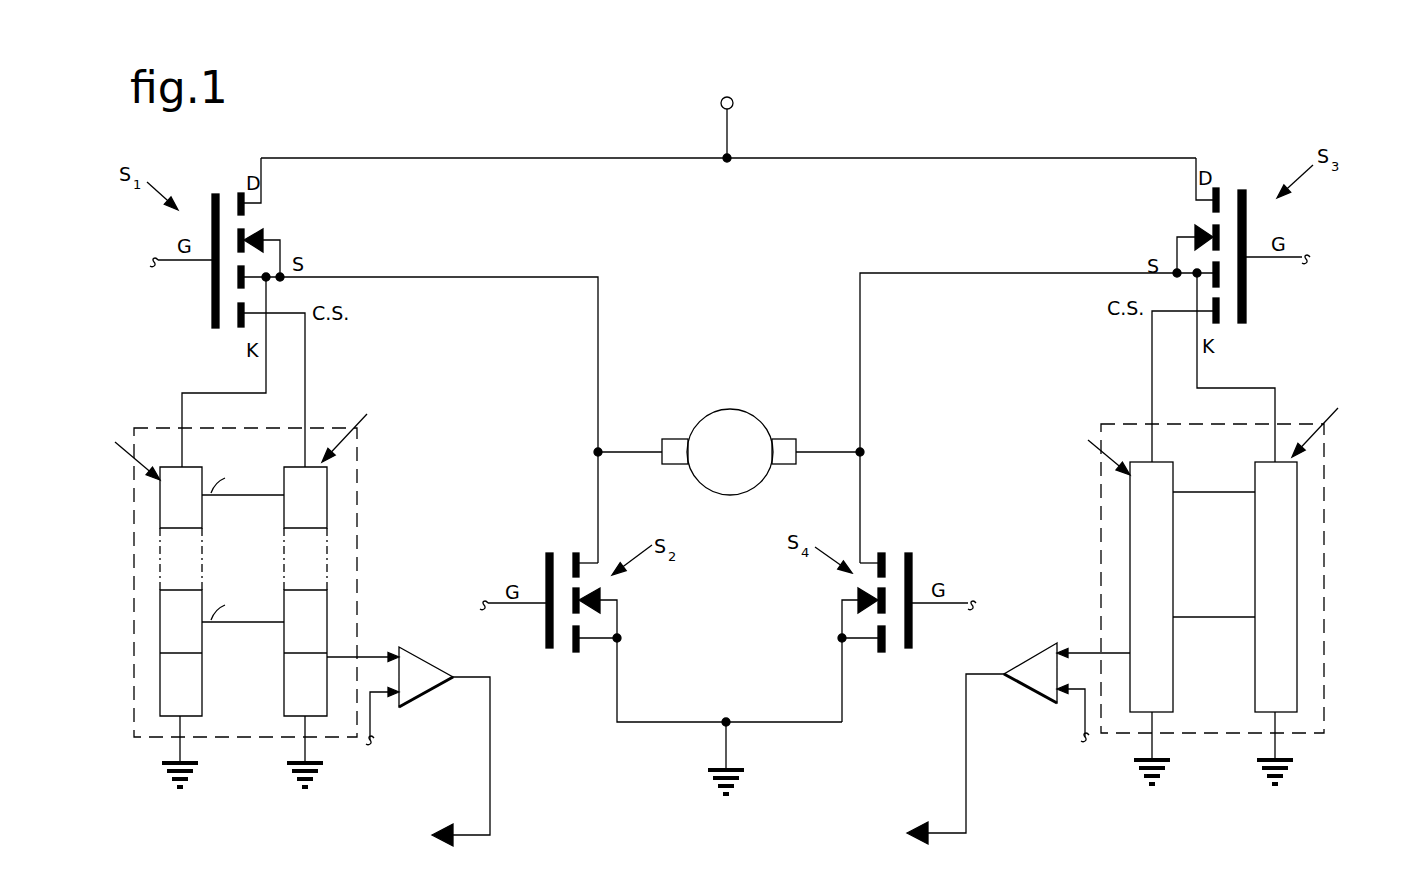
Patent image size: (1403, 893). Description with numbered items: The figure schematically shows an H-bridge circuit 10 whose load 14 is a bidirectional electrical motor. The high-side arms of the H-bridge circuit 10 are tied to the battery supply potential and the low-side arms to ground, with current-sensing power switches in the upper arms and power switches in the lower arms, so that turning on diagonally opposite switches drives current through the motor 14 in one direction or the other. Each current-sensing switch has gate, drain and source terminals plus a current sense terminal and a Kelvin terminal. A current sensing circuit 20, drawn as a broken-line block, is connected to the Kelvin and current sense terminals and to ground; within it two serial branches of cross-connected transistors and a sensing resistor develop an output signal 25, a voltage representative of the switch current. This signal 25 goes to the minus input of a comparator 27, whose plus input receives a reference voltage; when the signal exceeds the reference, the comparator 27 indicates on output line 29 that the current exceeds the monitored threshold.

The H-bridge circuit 10 is at (1003, 110).
The load 14 is at (720, 410).
The current sensing circuit 20 is at (148, 428).
The output signal 25 is at (366, 654).
The comparator 27 is at (430, 664).
The output line 29 is at (490, 745).